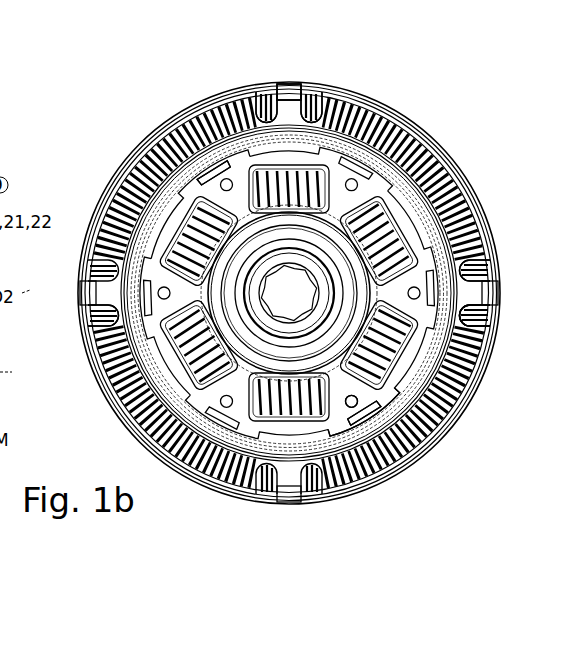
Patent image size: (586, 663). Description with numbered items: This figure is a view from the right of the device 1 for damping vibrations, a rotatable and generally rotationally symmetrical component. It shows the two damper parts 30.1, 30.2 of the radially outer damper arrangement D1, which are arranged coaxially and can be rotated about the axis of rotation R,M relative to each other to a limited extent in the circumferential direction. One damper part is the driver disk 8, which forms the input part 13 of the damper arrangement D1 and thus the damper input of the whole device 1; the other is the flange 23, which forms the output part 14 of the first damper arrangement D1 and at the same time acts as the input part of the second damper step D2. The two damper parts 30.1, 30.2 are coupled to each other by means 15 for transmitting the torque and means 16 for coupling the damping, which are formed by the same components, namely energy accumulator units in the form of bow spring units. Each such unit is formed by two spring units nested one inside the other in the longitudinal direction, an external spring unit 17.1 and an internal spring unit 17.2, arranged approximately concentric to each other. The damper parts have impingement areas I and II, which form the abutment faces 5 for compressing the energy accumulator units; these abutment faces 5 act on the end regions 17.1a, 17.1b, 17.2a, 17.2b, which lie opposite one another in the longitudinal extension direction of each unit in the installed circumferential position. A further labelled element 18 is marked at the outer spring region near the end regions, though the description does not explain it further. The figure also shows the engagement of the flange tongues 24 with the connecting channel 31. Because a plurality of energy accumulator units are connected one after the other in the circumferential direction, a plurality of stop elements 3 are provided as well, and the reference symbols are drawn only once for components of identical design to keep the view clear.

The device for damping vibrations 1 is at (448, 94).
The stop elements 3 is at (277, 88).
The abutment faces 5 is at (243, 82).
The driver disk 8 is at (419, 462).
The input part 13 is at (423, 454).
The output part 14 is at (285, 238).
The means for transmitting the torque 15 is at (335, 65).
The means for coupling the damping 16 is at (358, 88).
The external spring unit 17.1 is at (392, 112).
The internal spring unit 17.2 is at (437, 143).
The end region of the external spring unit 17.1a is at (345, 90).
The end region of the internal spring unit 17.2a is at (357, 92).
The end region of the external spring unit 17.1b is at (497, 322).
The end region of the internal spring unit 17.2b is at (510, 317).
The spring end cap 18 is at (490, 234).
The flange 23 is at (193, 150).
The flange tongues 24 is at (290, 512).
The damper part 30.1 is at (433, 452).
The damper part 30.2 is at (281, 229).
The connecting channel 31 is at (73, 307).
The radially outer damper arrangement D1 is at (134, 143).
The second damper step D2 is at (113, 413).
The axis of rotation R,M is at (290, 295).
The impingement area I is at (225, 505).
The impingement area II is at (497, 263).